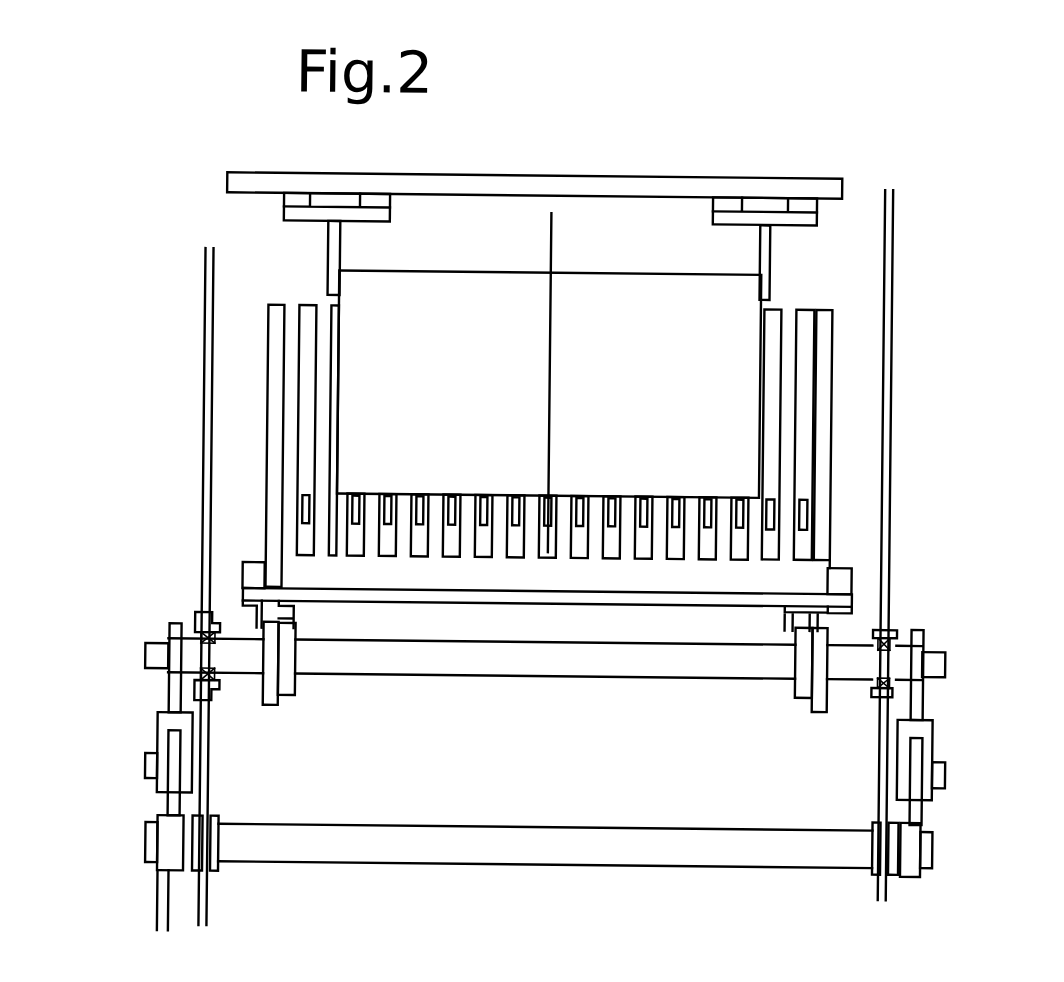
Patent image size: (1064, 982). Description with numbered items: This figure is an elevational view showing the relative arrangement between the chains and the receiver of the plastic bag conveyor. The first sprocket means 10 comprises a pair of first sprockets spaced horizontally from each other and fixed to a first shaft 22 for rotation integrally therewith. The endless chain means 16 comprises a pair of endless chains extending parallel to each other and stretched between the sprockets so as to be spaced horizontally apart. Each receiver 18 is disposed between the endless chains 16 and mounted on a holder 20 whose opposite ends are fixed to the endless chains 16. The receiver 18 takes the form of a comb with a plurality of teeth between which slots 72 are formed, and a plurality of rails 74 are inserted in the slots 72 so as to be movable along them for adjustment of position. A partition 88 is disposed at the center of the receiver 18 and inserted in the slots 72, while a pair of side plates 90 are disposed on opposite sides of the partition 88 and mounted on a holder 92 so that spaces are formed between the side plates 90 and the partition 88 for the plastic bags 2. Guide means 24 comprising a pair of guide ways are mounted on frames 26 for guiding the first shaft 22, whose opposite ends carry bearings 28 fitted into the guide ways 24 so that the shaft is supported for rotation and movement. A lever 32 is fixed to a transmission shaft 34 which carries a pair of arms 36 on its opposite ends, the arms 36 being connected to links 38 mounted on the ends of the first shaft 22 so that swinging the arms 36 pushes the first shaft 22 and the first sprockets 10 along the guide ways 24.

The plastic bag 2 is at (353, 342).
The first sprocket means 10 is at (274, 640).
The endless chain means 16 is at (269, 610).
The receiver 18 is at (819, 397).
The holder 20 is at (758, 598).
The first shaft 22 is at (472, 661).
The guide means 24 is at (198, 622).
The frame 26 is at (204, 393).
The bearing 28 is at (199, 680).
The lever 32 is at (161, 911).
The transmission shaft 34 is at (664, 829).
The arm 36 is at (176, 811).
The link 38 is at (173, 746).
The slot 72 is at (319, 382).
The rail 74 is at (390, 510).
The partition 88 is at (549, 230).
The side plate 90 is at (326, 264).
The holder 92 is at (797, 177).